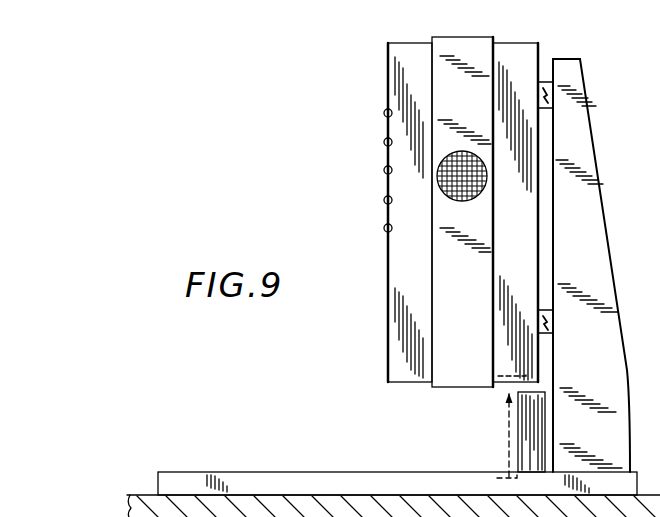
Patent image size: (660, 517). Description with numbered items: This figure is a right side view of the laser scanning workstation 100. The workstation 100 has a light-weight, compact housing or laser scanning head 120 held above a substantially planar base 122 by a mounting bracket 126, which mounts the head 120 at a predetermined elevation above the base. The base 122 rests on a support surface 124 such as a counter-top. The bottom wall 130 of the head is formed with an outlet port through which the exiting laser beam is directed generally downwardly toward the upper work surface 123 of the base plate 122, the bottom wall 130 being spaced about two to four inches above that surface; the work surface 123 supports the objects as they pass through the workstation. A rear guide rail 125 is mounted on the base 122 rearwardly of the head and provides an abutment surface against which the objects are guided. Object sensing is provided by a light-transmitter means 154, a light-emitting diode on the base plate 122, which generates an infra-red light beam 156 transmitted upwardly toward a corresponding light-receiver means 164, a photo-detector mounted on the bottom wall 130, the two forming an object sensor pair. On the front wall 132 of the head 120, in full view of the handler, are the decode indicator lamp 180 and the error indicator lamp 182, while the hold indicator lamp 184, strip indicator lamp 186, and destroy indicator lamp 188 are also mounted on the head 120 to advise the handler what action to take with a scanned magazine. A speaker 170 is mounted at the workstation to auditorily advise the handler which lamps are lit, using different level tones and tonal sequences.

The workstation 100 is at (300, 181).
The laser scanning head 120 is at (458, 298).
The planar base 122 is at (205, 481).
The upper work surface 123 is at (290, 472).
The support surface 124 is at (143, 495).
The rear guide rail 125 is at (538, 426).
The mounting bracket 126 is at (583, 252).
The bottom wall 130 is at (505, 383).
The front wall 132 is at (388, 350).
The light-transmitter means 154 is at (498, 478).
The infra-red light beam 156 is at (509, 446).
The light-receiver means 164 is at (514, 365).
The speaker 170 is at (451, 200).
The decode indicator lamp 180 is at (383, 200).
The error indicator lamp 182 is at (383, 142).
The hold indicator lamp 184 is at (383, 229).
The strip indicator lamp 186 is at (383, 170).
The destroy indicator lamp 188 is at (383, 113).